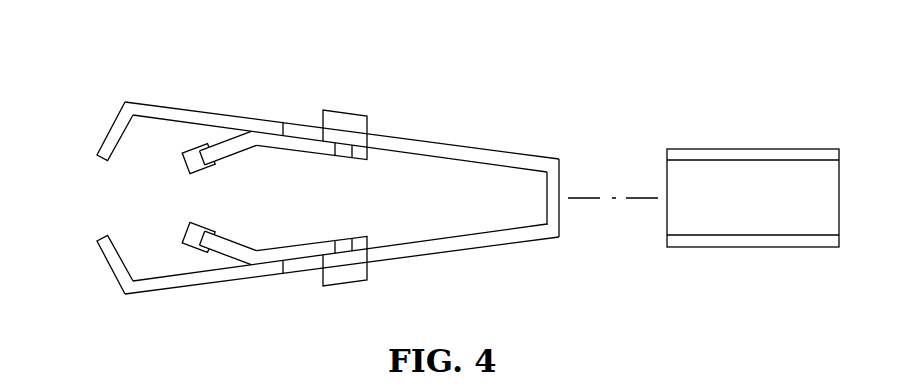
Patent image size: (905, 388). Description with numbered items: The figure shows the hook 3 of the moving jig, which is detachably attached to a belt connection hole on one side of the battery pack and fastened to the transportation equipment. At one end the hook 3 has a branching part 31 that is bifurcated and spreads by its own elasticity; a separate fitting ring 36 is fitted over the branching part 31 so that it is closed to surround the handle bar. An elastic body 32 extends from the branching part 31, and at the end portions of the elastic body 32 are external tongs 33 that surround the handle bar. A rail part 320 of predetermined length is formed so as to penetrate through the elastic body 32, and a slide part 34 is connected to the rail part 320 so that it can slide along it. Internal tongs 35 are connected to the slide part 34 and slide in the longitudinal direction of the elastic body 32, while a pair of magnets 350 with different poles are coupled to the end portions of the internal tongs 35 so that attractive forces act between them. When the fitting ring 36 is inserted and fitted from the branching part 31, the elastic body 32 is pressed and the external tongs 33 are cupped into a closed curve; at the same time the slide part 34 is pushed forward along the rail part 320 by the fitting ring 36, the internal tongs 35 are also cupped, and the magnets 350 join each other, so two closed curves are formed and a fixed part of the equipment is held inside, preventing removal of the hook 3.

The hook 3 is at (329, 158).
The branching part 31 is at (565, 168).
The elastic body 32 is at (413, 137).
The rail part 320 is at (293, 121).
The external tongs 33 is at (95, 135).
The slide part 34 is at (352, 112).
The internal tongs 35 is at (233, 157).
The magnets 350 is at (180, 167).
The fitting ring 36 is at (720, 145).